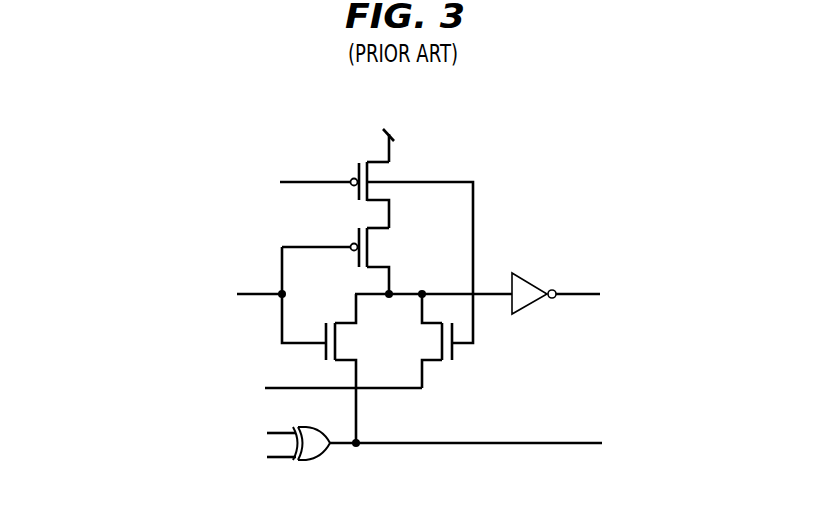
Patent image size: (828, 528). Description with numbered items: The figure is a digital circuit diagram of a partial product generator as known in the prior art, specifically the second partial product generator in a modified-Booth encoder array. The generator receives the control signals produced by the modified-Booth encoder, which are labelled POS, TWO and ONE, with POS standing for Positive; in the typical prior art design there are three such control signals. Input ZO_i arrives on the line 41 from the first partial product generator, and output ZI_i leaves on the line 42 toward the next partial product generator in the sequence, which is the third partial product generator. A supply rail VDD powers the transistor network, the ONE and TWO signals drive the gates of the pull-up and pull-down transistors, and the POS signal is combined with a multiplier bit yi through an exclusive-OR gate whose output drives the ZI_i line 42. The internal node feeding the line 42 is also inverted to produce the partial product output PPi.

The Z0i input line from previous bit 41 is at (318, 389).
The ZIi output line to next bit 42 is at (505, 444).
The supply voltage VDD is at (388, 130).
The ONE control signal ONE is at (314, 166).
The TWO control signal TWO is at (258, 278).
The POS (Positive) control signal POS is at (261, 433).
The yi multiplier bit input yi is at (266, 453).
The partial product output PPi is at (599, 293).